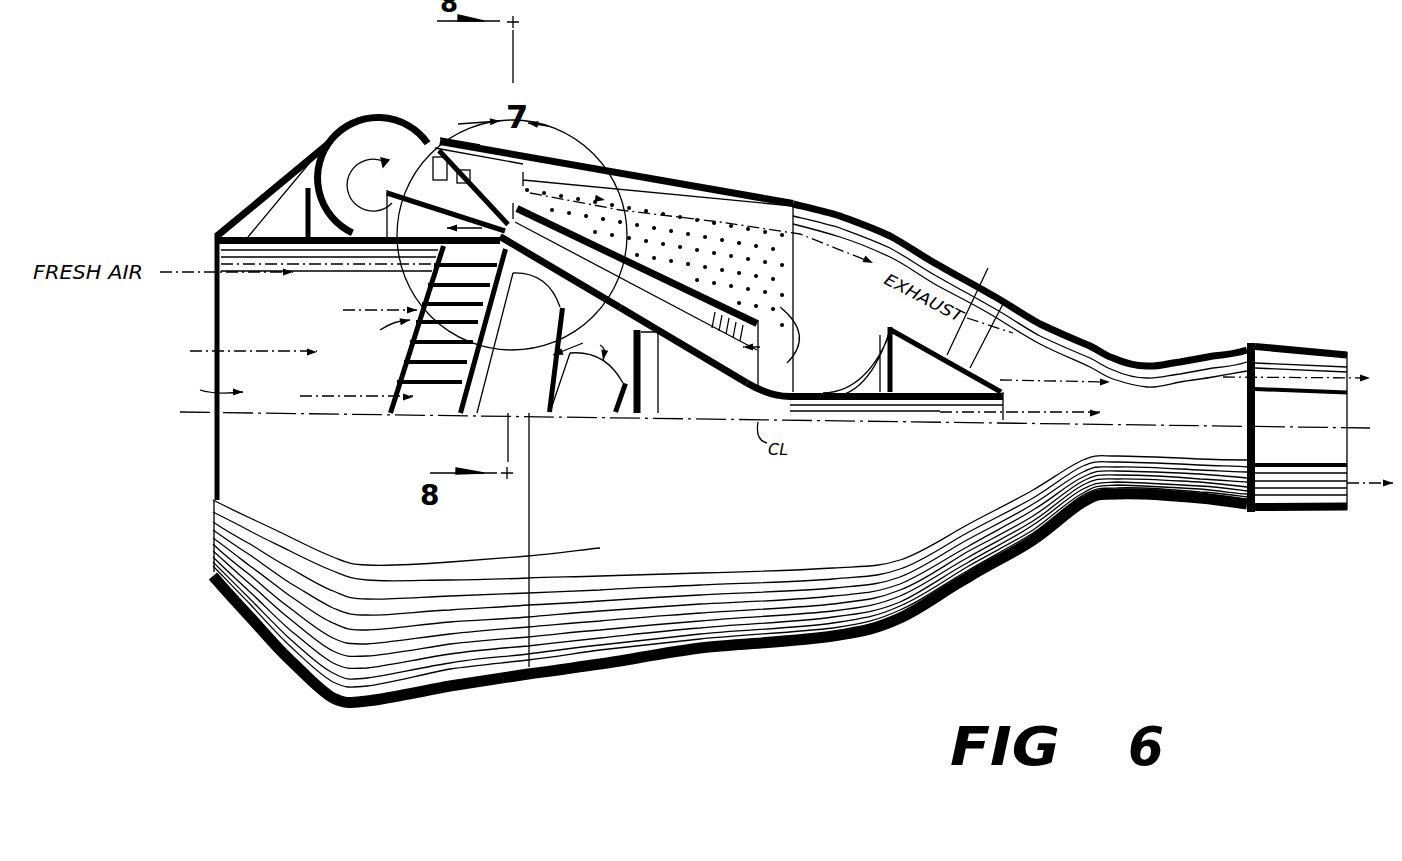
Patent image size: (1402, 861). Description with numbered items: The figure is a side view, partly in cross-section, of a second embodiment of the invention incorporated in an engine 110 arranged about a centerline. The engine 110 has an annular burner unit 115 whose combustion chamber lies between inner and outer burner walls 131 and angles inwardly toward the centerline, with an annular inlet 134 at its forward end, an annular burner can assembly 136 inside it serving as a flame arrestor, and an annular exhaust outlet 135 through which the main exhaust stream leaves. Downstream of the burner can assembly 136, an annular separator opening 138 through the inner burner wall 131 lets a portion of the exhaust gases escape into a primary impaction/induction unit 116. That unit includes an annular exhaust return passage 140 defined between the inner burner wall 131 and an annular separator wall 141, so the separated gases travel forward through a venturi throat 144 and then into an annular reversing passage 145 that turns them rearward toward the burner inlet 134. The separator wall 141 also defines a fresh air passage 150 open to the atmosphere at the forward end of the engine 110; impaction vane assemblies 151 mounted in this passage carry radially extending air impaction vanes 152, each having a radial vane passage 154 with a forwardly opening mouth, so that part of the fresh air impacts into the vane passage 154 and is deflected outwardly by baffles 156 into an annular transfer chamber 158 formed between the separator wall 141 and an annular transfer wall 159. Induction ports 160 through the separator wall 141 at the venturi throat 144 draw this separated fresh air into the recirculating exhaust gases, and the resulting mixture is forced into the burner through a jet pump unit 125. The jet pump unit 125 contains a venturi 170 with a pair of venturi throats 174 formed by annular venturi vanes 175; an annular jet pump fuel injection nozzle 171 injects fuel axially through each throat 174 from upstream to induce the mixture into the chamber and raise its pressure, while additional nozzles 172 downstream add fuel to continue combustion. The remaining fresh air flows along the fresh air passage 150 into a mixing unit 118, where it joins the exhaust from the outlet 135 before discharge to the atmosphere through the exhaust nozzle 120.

The engine 110 is at (815, 152).
The annular burner unit 115 is at (690, 178).
The primary impaction/induction unit 116 is at (493, 410).
The mixing unit 118 is at (1126, 352).
The exhaust nozzle 120 is at (1292, 345).
The jet pump unit 125 is at (480, 136).
The burner walls 131 is at (563, 160).
The annular inlet 134 is at (540, 152).
The annular exhaust outlet 135 is at (980, 277).
The annular burner can assembly 136 is at (623, 187).
The annular separator opening 138 is at (912, 362).
The annular exhaust return passage 140 is at (683, 328).
The annular separator wall 141 is at (718, 362).
The venturi throat 144 is at (358, 255).
The annular reversing passage 145 is at (347, 130).
The fresh air passage 150 is at (206, 384).
The impaction vane assemblies 151 is at (479, 339).
The air impaction vanes 152 is at (397, 387).
The radial vane passage 154 is at (417, 410).
The baffles 156 is at (410, 357).
The annular transfer chamber 158 is at (623, 287).
The annular transfer wall 159 is at (623, 330).
The induction ports 160 is at (560, 272).
The venturi 170 is at (503, 148).
The annular jet pump fuel injection nozzle 171 is at (433, 175).
The nozzles 172 is at (470, 181).
The annular venturi vanes 175 is at (446, 210).
The venturi throats 174 is at (460, 137).